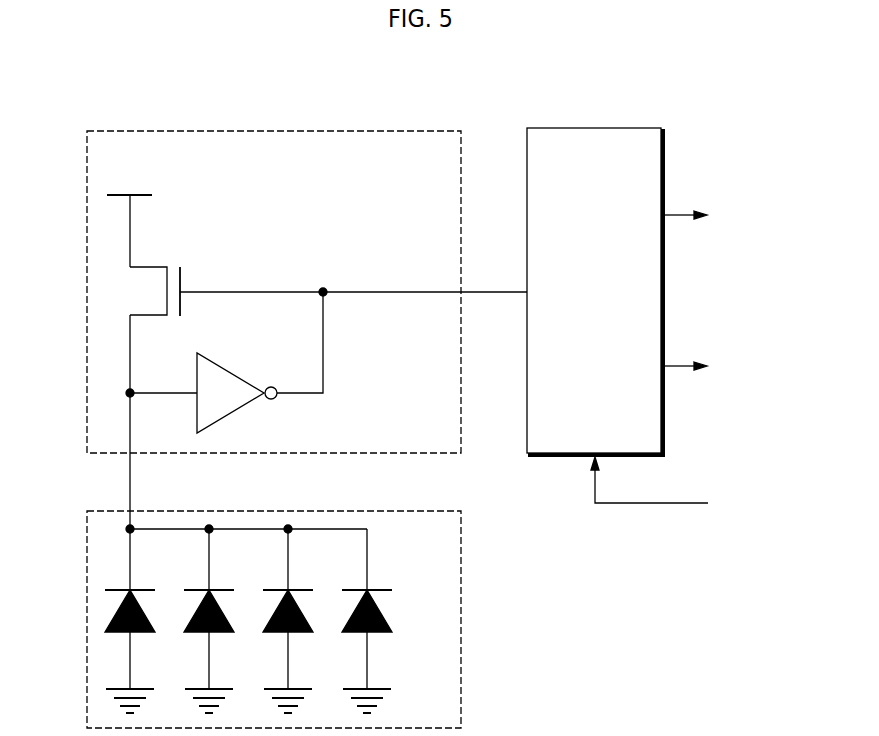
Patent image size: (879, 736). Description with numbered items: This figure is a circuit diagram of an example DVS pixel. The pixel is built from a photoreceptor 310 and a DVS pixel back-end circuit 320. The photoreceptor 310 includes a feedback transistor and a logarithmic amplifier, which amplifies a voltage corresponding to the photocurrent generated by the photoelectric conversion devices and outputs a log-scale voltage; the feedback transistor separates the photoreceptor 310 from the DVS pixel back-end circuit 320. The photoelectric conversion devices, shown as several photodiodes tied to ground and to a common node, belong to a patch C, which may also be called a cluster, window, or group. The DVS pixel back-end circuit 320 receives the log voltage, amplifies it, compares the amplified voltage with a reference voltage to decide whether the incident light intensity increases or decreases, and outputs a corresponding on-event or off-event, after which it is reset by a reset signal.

The photoreceptor 310 is at (274, 131).
The DVS pixel back-end circuit 320 is at (594, 128).
The patch C is at (87, 511).